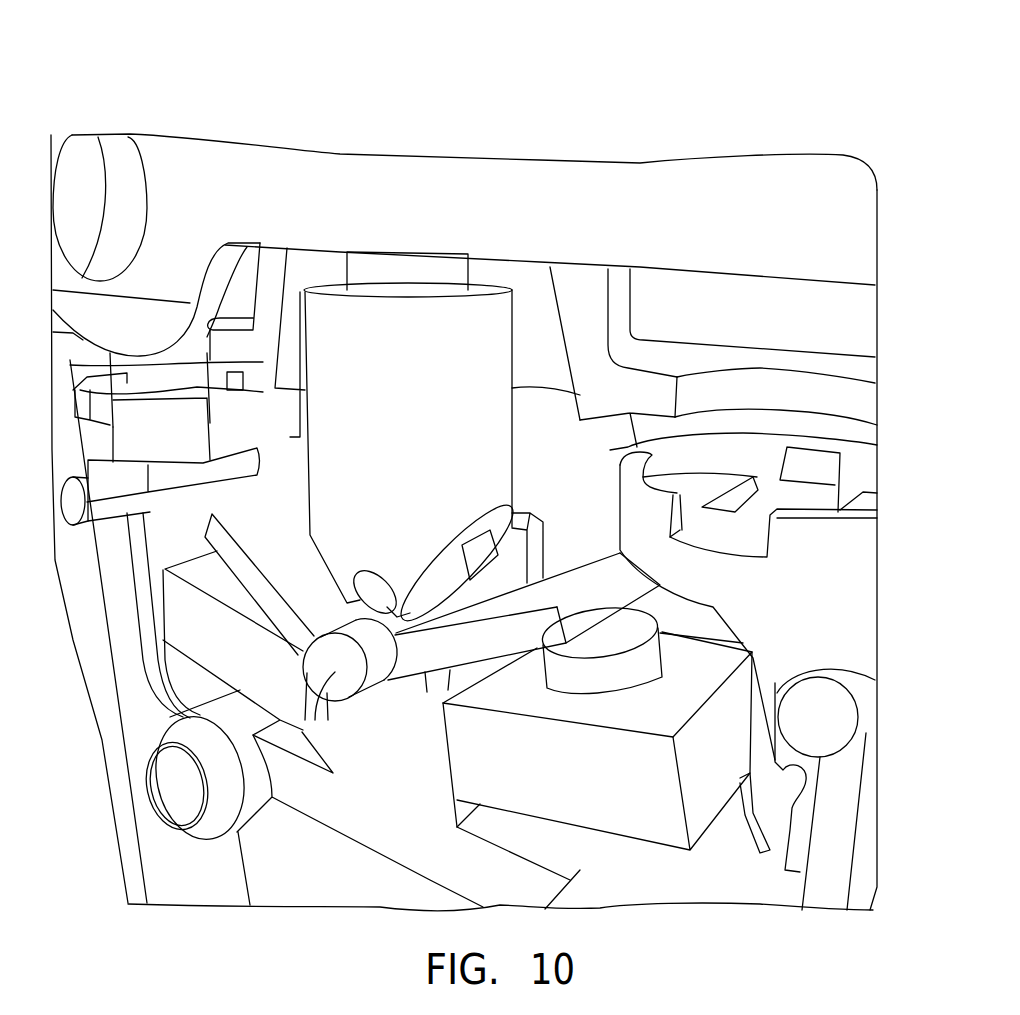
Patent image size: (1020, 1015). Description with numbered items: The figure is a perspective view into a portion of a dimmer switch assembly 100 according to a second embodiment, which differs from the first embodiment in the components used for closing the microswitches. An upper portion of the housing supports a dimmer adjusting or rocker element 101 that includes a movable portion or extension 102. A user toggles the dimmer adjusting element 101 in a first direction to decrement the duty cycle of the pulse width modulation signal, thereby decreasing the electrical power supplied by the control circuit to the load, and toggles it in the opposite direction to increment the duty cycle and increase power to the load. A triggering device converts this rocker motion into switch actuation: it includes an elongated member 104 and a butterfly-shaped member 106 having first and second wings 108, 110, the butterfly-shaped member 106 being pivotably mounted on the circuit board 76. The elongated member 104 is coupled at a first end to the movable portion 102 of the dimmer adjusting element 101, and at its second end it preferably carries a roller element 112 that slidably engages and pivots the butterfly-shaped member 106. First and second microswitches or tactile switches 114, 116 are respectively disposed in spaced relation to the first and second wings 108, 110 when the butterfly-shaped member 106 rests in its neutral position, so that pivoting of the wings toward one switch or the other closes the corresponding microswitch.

The dimmer switch assembly 100 is at (733, 110).
The dimmer adjusting element 101 is at (366, 216).
The movable portion 102 is at (437, 272).
The elongated member 104 is at (473, 463).
The butterfly-shaped member 106 is at (328, 730).
The first wing 108 is at (553, 583).
The second wing 110 is at (283, 547).
The roller element 112 is at (467, 578).
The first microswitch 114 is at (635, 807).
The second microswitch 116 is at (184, 617).
The circuit board 76 is at (683, 607).